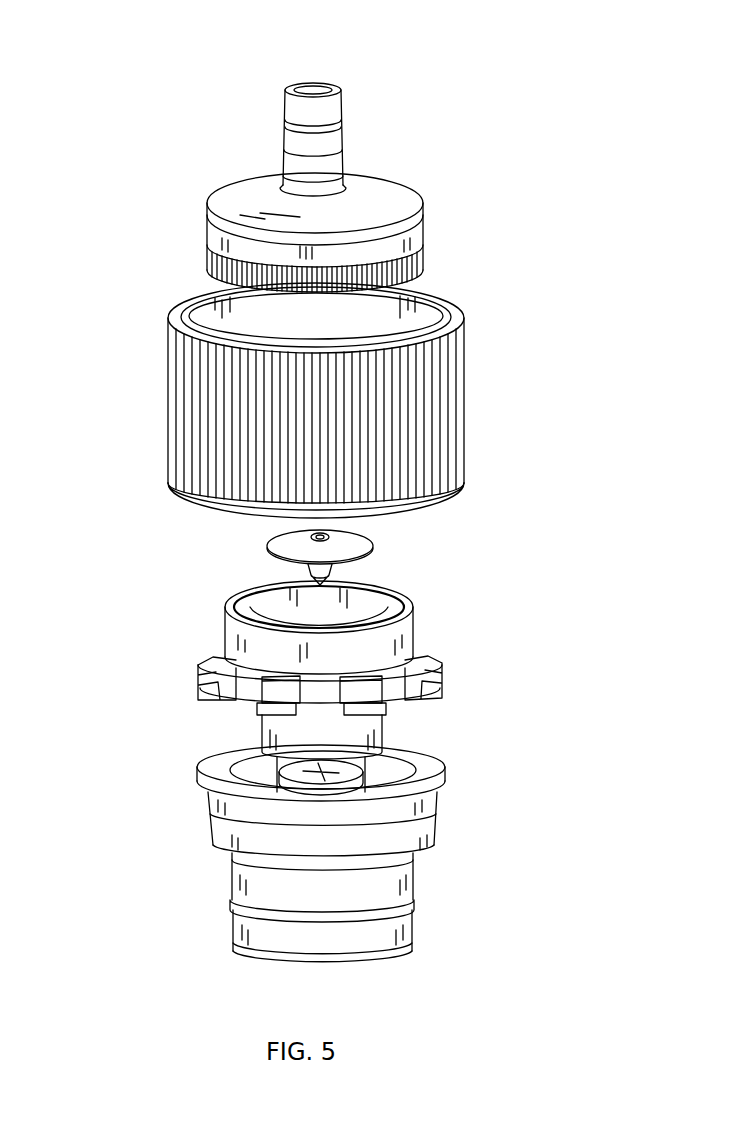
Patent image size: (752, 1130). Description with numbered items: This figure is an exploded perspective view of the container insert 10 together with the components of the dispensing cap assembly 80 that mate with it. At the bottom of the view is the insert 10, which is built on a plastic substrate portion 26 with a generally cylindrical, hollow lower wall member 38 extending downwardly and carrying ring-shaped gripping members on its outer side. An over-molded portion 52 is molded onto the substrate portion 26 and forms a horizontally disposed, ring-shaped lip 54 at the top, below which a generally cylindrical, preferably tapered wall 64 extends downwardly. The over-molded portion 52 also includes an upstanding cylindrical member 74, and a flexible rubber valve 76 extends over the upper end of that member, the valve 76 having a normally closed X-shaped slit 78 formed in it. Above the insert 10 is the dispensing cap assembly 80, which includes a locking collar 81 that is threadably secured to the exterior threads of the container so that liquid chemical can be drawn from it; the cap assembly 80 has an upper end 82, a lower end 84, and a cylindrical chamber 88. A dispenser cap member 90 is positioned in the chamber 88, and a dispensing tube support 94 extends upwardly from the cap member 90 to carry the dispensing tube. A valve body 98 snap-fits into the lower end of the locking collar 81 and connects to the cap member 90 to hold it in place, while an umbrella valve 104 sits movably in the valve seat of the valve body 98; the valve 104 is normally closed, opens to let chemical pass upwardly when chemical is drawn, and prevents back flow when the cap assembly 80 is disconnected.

The container insert 10 is at (172, 808).
The substrate portion 26 is at (443, 938).
The lower wall member 38 is at (232, 885).
The over-molded portion 52 is at (455, 844).
The lip 54 is at (440, 756).
The tapered wall 64 is at (237, 827).
The upstanding cylindrical member 74 is at (372, 788).
The flexible rubber valve 76 is at (362, 753).
The X-shaped slit 78 is at (257, 747).
The dispensing cap assembly 80 is at (497, 345).
The locking collar 81 is at (421, 412).
The upper end 82 is at (428, 168).
The lower end 84 is at (425, 515).
The cylindrical chamber 88 is at (400, 318).
The dispenser cap member 90 is at (237, 150).
The dispensing tube support 94 is at (330, 112).
The valve body 98 is at (210, 622).
The umbrella valve 104 is at (278, 543).